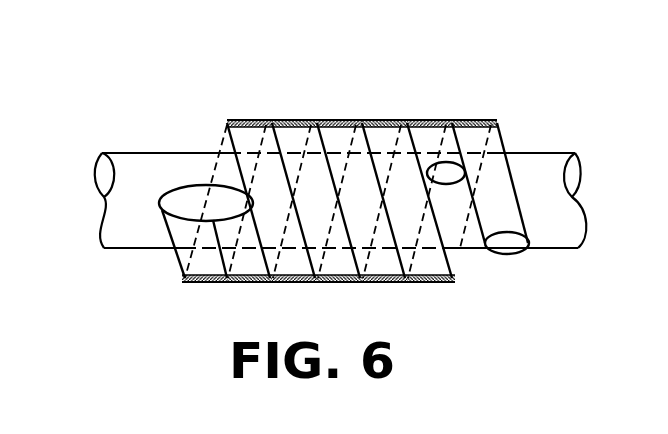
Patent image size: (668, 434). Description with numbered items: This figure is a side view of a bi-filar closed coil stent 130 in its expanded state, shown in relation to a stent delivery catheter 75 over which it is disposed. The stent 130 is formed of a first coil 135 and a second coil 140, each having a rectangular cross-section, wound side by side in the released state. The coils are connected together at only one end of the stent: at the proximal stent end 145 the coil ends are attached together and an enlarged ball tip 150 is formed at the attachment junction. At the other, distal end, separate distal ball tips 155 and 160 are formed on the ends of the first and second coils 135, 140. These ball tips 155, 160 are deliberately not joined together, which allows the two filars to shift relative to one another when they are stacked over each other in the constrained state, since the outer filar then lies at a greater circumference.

The catheter shaft 75 is at (131, 166).
The bi-filar closed coil stent 130 is at (366, 199).
The first coil 135 is at (430, 150).
The second coil 140 is at (484, 153).
The proximal stent end 145 is at (168, 262).
The enlarged ball tip 150 is at (183, 203).
The distal ball tip 155 is at (450, 185).
The distal ball tip 160 is at (515, 243).